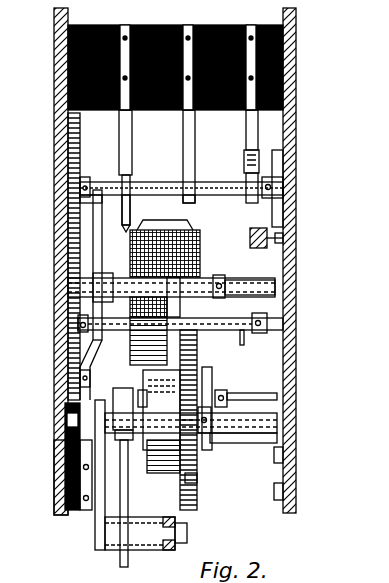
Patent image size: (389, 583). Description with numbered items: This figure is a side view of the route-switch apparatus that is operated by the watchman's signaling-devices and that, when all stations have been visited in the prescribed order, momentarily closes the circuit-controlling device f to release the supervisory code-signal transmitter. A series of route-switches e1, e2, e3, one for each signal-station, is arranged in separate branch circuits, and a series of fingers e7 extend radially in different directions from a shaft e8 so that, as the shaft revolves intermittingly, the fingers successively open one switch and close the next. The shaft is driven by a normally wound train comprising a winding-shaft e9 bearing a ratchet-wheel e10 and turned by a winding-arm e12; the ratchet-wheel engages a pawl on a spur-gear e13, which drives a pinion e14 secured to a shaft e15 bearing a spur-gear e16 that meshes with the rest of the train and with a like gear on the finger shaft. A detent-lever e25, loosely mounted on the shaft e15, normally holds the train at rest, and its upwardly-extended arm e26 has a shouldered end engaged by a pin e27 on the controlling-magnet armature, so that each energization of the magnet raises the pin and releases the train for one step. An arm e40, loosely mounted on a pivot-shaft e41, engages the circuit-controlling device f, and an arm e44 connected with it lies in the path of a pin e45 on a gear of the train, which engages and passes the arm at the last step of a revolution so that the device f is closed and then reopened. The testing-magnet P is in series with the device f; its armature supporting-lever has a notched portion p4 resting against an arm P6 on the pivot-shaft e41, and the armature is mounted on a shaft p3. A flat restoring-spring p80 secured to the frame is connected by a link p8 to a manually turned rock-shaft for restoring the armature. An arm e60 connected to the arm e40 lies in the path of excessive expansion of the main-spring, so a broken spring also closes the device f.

The route-switch e1 is at (119, 130).
The route-switch e2 is at (183, 132).
The route-switch e3 is at (246, 133).
The fingers e7 is at (130, 212).
The shaft e8 is at (155, 190).
The upwardly-extended arm e26 is at (283, 190).
The pin e27 is at (268, 252).
The pin e45 is at (68, 232).
The spur-gear e16 is at (68, 305).
The arm e44 is at (100, 257).
The arm e40 is at (97, 358).
The testing-magnet P is at (200, 258).
The arm e60 is at (185, 280).
The arm P6 is at (228, 283).
The pivot-shaft e41 is at (235, 285).
The pinion e14 is at (180, 315).
The shaft e15 is at (243, 330).
The portion of supporting-lever p4 is at (212, 375).
The detent-lever e25 is at (275, 367).
The shaft p3 is at (255, 393).
The winding-shaft e9 is at (232, 435).
The flat restoring-spring p80 is at (255, 440).
The ratchet-wheel e10 is at (197, 478).
The spur-gear e13 is at (180, 498).
The link p8 is at (128, 487).
The winding-arm e12 is at (105, 532).
The circuit-controlling device f is at (57, 498).